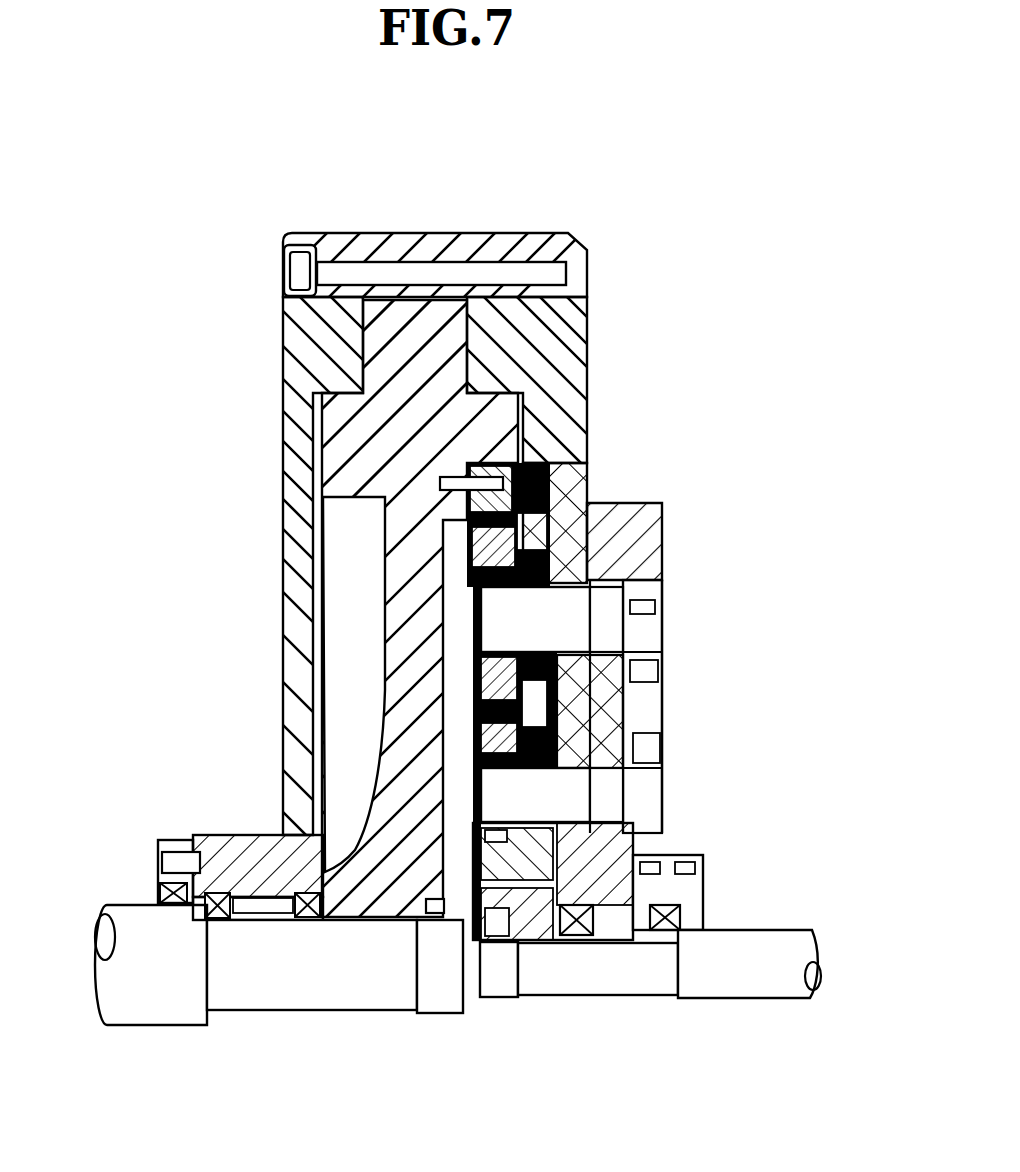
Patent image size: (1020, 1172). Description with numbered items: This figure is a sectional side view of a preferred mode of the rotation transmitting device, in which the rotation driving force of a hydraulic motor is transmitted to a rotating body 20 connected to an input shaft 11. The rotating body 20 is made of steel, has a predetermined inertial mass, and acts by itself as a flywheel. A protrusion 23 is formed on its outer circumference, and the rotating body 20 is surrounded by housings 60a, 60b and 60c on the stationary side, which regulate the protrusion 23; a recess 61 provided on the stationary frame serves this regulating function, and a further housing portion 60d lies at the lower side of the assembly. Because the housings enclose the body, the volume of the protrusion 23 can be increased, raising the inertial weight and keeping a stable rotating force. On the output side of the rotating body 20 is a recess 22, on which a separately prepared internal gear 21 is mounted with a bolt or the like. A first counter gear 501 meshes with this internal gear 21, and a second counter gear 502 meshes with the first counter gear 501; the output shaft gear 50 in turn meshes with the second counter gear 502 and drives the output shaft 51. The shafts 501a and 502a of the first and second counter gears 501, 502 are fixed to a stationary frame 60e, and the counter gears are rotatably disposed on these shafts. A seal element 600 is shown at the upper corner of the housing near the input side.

The input shaft 11 is at (273, 997).
The rotating body 20 is at (410, 575).
The internal gear 21 is at (527, 508).
The recess 22 is at (447, 622).
The protrusion 23 is at (427, 333).
The output shaft gear 50 is at (527, 945).
The drive shaft 51 is at (590, 977).
The housing 60a is at (281, 360).
The housing 60b is at (588, 343).
The housing 60c is at (415, 233).
The housing bottom wall 60d is at (223, 835).
The stationary frame 60e is at (662, 508).
The recess 61 is at (428, 330).
The first counter gear 501 is at (667, 677).
The shaft of the first counter gear 501a is at (652, 630).
The second counter gear 502 is at (660, 847).
The shaft of the second counter gear 502a is at (660, 797).
The seal member 600 is at (283, 267).